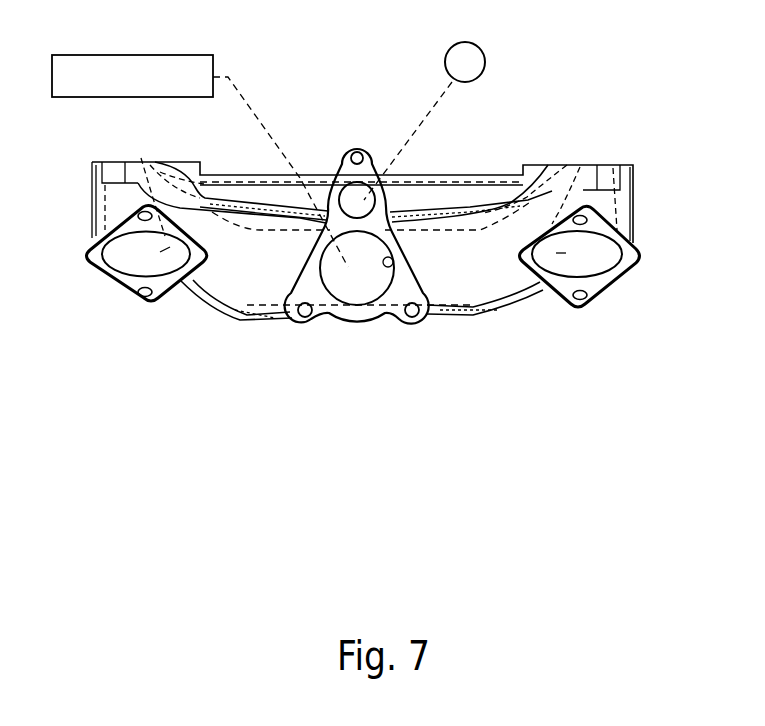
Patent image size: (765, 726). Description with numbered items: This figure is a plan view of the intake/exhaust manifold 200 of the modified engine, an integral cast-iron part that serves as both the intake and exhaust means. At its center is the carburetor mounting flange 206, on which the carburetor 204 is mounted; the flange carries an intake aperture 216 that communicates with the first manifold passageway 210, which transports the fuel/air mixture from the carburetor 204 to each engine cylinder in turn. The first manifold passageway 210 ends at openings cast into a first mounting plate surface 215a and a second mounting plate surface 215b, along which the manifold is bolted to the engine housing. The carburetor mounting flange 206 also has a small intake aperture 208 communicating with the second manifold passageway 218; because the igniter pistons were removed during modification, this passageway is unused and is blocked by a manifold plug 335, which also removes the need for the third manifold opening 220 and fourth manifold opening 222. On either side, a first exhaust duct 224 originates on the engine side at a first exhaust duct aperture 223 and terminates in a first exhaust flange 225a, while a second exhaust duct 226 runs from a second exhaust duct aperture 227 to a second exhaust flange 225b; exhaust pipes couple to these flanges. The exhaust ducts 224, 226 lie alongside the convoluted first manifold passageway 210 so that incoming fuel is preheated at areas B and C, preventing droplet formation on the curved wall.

The intake/exhaust manifold 200 is at (664, 60).
The carburetor 204 is at (121, 54).
The carburetor mounting flange 206 is at (374, 137).
The small intake aperture 208 is at (341, 172).
The first manifold passageway 210 is at (459, 288).
The first mounting plate surface 215a is at (165, 162).
The second mounting plate surface 215b is at (550, 165).
The intake aperture 216 is at (393, 262).
The second manifold passageway 218 is at (430, 197).
The third manifold opening 220 is at (141, 158).
The fourth manifold opening 222 is at (580, 167).
The first exhaust duct aperture 223 is at (110, 162).
The first exhaust duct 224 is at (118, 261).
The first exhaust flange 225a is at (167, 298).
The second exhaust flange 225b is at (623, 270).
The second exhaust duct 226 is at (593, 264).
The second exhaust duct aperture 227 is at (603, 163).
The manifold plug 335 is at (486, 50).